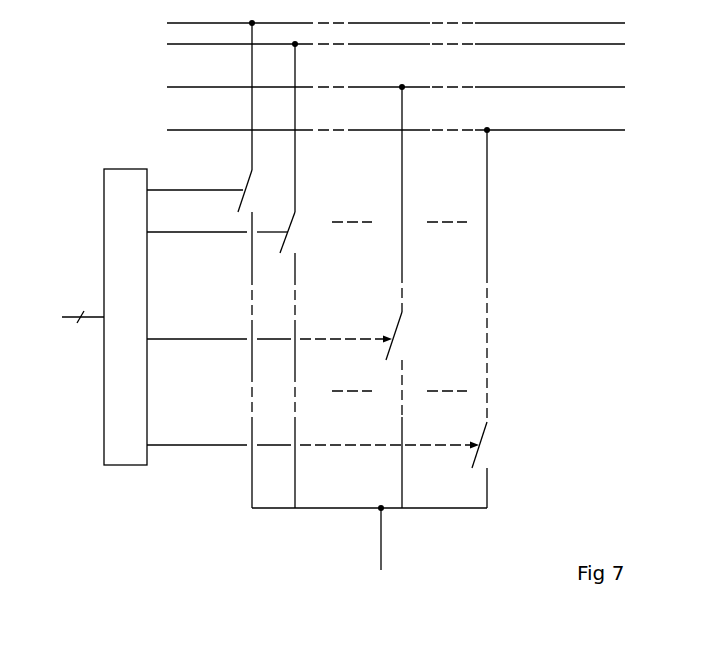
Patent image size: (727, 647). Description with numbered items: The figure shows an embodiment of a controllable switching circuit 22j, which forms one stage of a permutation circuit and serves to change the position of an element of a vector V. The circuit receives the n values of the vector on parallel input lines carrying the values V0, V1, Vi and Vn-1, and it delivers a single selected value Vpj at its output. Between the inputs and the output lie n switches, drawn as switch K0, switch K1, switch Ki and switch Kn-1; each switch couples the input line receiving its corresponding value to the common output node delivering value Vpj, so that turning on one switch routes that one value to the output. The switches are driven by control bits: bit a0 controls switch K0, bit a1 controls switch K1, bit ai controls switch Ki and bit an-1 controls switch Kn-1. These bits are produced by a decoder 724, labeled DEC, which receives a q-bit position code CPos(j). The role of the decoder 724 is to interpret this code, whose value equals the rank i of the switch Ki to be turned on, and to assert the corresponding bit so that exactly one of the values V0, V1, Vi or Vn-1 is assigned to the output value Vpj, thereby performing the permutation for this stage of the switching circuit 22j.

The decoder 724 is at (123, 466).
The controllable switching circuit 22j is at (374, 314).
The value V0 is at (382, 22).
The value V1 is at (382, 44).
The value Vi is at (384, 86).
The value Vn-1 is at (374, 129).
The switch K0 is at (256, 265).
The switch K1 is at (297, 276).
The switch Ki is at (400, 297).
The switch Kn-1 is at (497, 319).
The value Vpj is at (369, 548).
The bit a0 is at (175, 188).
The bit a1 is at (175, 230).
The bit ai is at (175, 337).
The bit an-1 is at (175, 443).